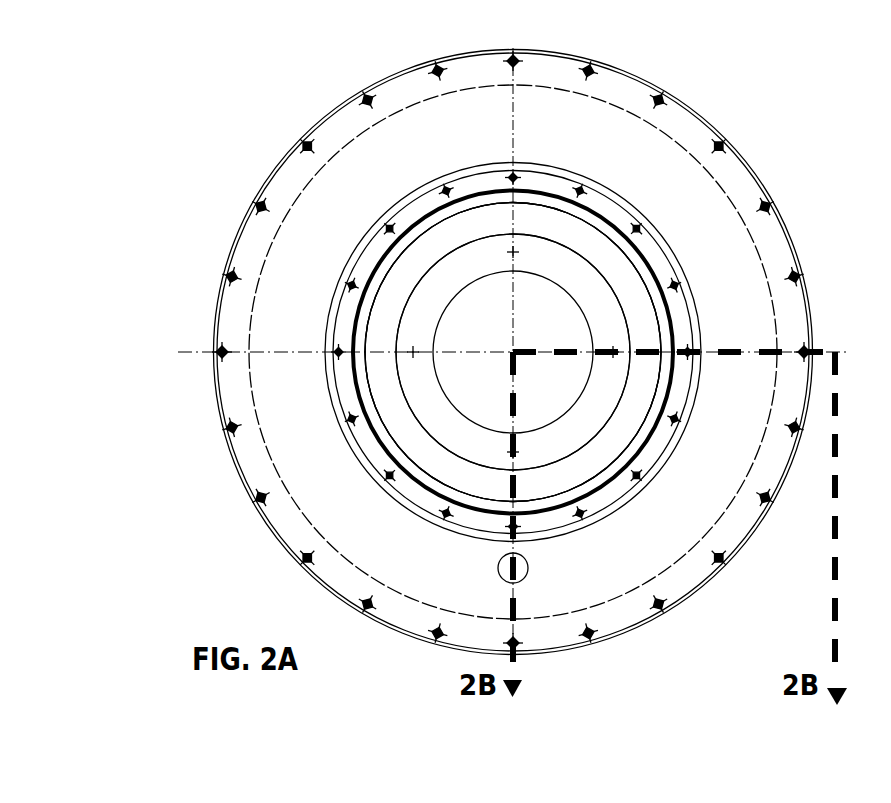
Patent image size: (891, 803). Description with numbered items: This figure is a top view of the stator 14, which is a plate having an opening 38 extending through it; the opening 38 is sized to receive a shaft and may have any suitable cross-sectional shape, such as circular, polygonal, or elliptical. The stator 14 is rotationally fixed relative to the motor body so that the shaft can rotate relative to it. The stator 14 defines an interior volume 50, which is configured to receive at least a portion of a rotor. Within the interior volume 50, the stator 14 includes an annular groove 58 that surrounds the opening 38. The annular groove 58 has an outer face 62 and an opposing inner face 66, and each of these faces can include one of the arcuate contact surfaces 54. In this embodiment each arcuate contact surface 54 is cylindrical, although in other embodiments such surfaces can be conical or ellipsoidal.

The stator 14 is at (376, 63).
The opening 38 is at (455, 410).
The interior volume 50 is at (416, 236).
The arcuate contact surfaces 54 is at (618, 303).
The annular groove 58 is at (375, 330).
The outer face 62 is at (602, 232).
The inner face 66 is at (598, 272).